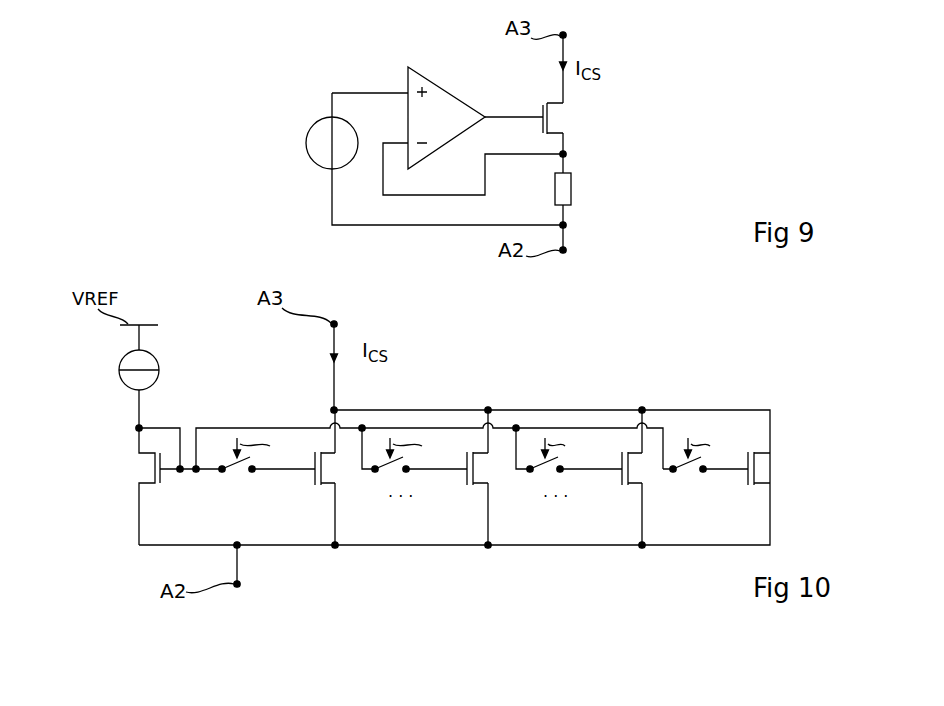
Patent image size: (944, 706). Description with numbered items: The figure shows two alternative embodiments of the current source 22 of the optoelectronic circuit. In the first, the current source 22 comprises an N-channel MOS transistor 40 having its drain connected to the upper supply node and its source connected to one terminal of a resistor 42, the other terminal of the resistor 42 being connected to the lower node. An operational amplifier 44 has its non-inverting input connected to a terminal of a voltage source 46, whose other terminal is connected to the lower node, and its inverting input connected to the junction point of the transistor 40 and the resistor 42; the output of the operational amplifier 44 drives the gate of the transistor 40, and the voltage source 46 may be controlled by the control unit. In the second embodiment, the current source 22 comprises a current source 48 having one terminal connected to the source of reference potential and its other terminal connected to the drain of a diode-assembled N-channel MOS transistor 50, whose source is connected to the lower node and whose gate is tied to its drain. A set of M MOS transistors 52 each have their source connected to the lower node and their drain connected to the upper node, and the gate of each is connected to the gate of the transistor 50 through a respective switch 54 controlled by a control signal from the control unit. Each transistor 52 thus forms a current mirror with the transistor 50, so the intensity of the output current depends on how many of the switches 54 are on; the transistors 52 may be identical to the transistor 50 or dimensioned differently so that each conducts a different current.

In FIG. 9, the current source 22 is at (652, 70).
In FIG. 10, the current source 22 is at (706, 348).
In FIG. 9, the MOS transistor 40 is at (559, 129).
In FIG. 9, the resistor 42 is at (572, 187).
In FIG. 9, the operational amplifier 44 is at (450, 92).
In FIG. 9, the voltage source 46 is at (306, 143).
In FIG. 10, the current source 48 is at (121, 362).
In FIG. 10, the diode-assembled MOS transistor 50 is at (148, 456).
In FIG. 10, the MOS transistors 52 is at (323, 487).
In FIG. 10, the switches 54 is at (240, 472).